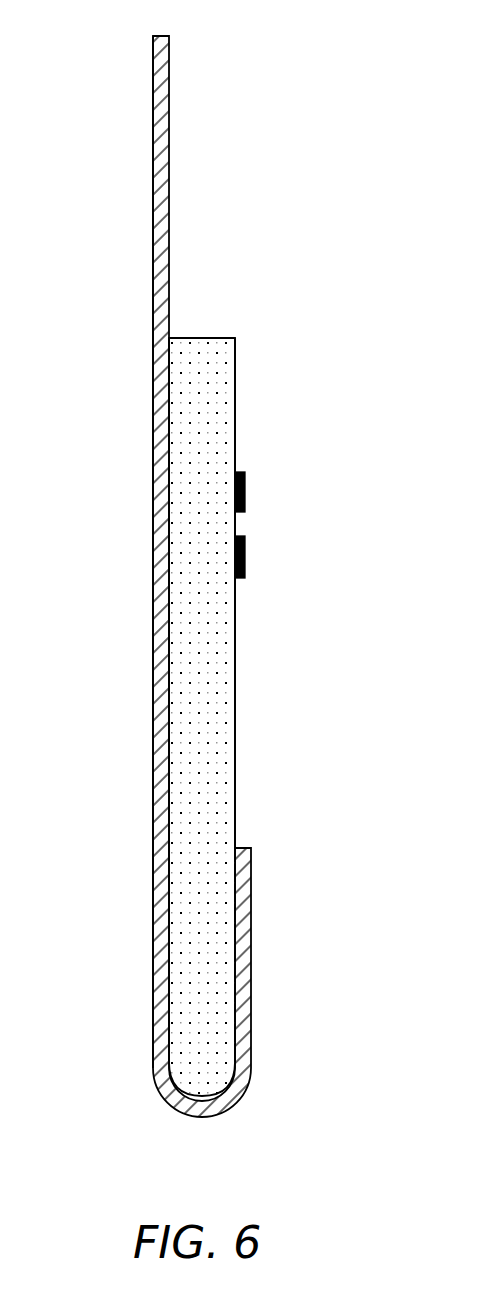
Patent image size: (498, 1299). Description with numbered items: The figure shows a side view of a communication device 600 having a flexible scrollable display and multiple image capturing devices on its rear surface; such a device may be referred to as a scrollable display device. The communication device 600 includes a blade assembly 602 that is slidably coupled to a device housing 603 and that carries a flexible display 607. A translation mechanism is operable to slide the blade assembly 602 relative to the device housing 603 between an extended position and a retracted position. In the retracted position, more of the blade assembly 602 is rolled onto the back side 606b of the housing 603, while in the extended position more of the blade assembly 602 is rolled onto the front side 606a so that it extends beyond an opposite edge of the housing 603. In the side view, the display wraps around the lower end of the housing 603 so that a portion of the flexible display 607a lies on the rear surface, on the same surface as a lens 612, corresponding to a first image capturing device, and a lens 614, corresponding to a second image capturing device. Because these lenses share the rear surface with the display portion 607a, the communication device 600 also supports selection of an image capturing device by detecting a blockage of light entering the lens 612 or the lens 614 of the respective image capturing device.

The communication device 600 is at (127, 40).
The blade assembly 602 is at (152, 255).
The device housing 603 is at (236, 392).
The front side 606a is at (165, 508).
The back side 606b is at (236, 427).
The flexible display 607 is at (160, 288).
The portion of the flexible display 607a is at (250, 927).
The lens 612 is at (245, 491).
The lens 614 is at (245, 555).